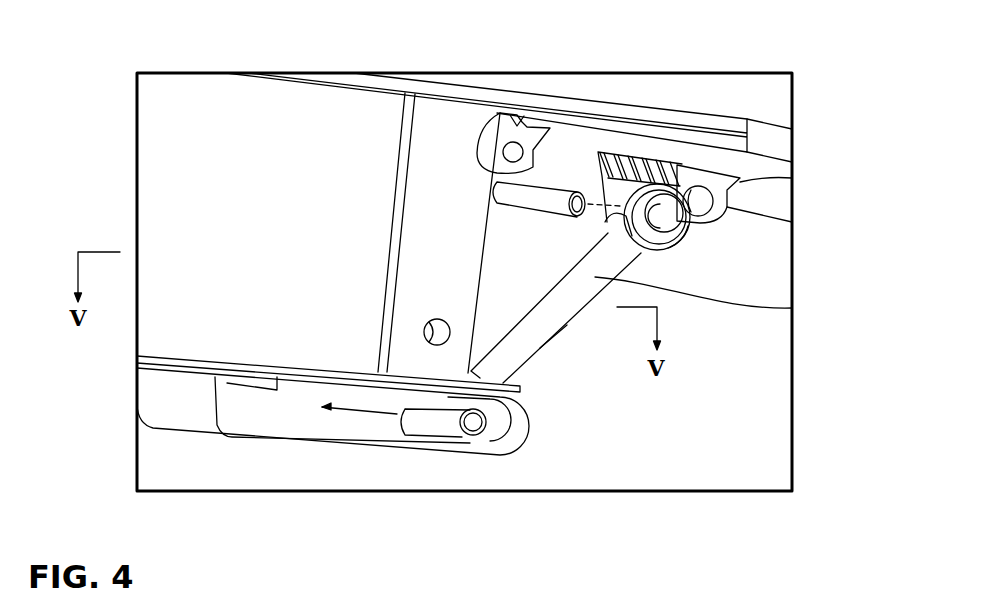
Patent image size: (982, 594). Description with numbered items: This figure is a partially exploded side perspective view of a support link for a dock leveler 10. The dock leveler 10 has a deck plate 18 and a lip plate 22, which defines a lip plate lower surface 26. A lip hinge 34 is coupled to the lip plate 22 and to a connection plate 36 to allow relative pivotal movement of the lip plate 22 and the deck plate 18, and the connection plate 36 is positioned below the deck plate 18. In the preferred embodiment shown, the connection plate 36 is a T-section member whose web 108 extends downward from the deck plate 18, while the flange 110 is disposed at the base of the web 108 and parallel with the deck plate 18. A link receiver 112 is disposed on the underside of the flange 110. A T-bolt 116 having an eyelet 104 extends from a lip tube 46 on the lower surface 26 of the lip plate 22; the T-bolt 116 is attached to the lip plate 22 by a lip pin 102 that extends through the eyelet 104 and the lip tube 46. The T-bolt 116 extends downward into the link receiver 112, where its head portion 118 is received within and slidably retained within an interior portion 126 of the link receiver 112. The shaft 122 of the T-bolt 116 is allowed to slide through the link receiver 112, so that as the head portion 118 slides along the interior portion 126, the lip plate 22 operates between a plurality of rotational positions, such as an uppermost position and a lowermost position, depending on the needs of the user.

The dock leveler 10 is at (177, 60).
The deck plate 18 is at (442, 93).
The lip plate 22 is at (770, 140).
The lip plate lower surface 26 is at (770, 200).
The lip hinge 34 is at (508, 113).
The connection plate 36 is at (187, 193).
The lip tube 46 is at (748, 186).
The lip pin 102 is at (550, 195).
The eyelet 104 is at (630, 188).
The web 108 is at (305, 135).
The flange 110 is at (515, 392).
The link receiver 112 is at (340, 443).
The T-bolt 116 is at (567, 325).
The head portion 118 is at (473, 424).
The shaft 122 is at (792, 308).
The interior portion 126 is at (293, 404).